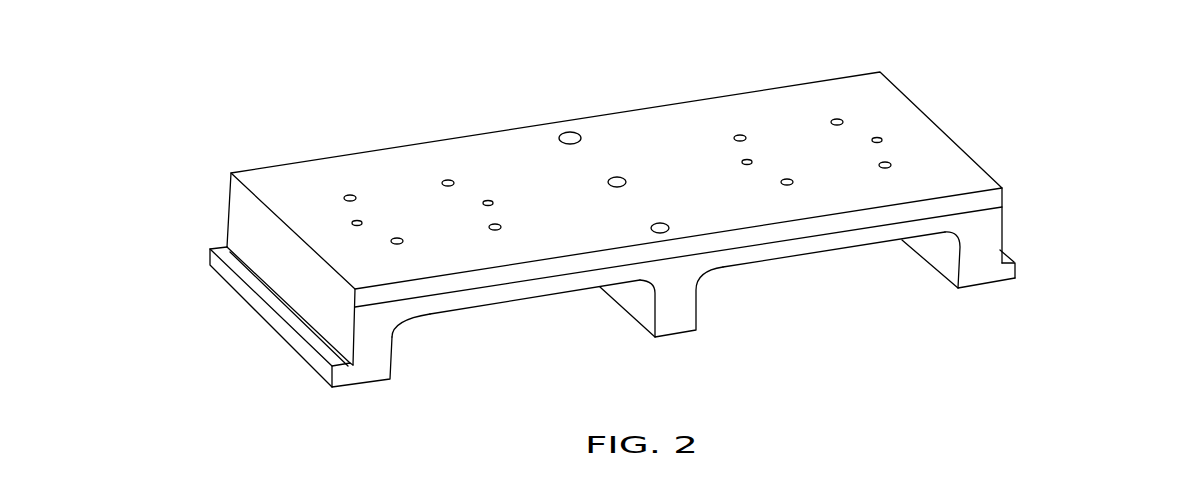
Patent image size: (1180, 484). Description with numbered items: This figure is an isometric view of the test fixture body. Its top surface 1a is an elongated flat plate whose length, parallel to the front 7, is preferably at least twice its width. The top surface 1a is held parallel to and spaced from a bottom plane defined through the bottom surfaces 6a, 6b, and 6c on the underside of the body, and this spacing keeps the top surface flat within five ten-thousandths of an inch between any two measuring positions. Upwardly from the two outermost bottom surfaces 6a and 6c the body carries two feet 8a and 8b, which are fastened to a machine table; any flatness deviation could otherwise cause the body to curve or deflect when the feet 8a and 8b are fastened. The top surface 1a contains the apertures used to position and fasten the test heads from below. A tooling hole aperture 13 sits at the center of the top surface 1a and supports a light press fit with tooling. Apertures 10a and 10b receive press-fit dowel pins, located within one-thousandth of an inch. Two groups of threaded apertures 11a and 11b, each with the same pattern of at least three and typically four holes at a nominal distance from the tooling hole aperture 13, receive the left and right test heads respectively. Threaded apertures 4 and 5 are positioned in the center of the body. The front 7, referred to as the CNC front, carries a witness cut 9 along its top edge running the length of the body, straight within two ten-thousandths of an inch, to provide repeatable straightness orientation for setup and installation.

The top surface 1a is at (693, 150).
The threaded aperture 4 is at (561, 130).
The tooling hole aperture 13 is at (614, 172).
The threaded aperture 5 is at (657, 218).
The group of threaded apertures 11a is at (489, 223).
The group of threaded apertures 11b is at (879, 161).
The dowel pin aperture 10a is at (481, 206).
The dowel pin aperture 10b is at (755, 157).
The witness cut 9 is at (965, 203).
The foot 8a is at (307, 330).
The foot 8b is at (1015, 257).
The bottom surface 6a is at (372, 382).
The bottom surface 6b is at (683, 341).
The bottom surface 6c is at (993, 292).
The front 7 is at (378, 327).